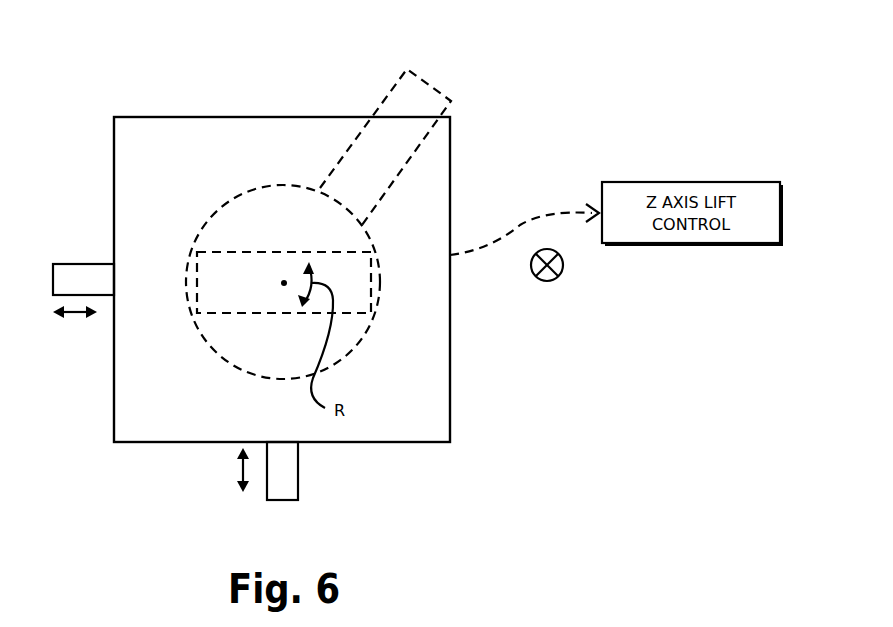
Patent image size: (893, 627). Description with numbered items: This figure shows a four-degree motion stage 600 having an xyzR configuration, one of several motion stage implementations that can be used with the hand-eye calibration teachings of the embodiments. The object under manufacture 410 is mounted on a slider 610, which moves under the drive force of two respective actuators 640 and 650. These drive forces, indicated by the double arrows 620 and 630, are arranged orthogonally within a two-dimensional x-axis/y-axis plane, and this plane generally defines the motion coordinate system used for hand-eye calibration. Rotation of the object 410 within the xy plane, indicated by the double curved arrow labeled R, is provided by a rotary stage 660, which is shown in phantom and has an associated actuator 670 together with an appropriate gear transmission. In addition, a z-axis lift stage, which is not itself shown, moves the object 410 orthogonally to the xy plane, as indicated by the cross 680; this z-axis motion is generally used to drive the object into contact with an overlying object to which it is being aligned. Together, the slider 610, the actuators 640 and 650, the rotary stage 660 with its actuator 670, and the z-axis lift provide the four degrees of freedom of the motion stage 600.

The four-degree motion stage 600 is at (508, 88).
The slider 610 is at (241, 127).
The double arrow (drive force) 620 is at (237, 469).
The double arrow (drive force) 630 is at (72, 313).
The actuator 640 is at (99, 262).
The actuator 650 is at (293, 485).
The rotary stage 660 is at (356, 356).
The actuator 670 is at (397, 96).
The cross 680 is at (558, 277).
The object under manufacture 410 is at (372, 313).